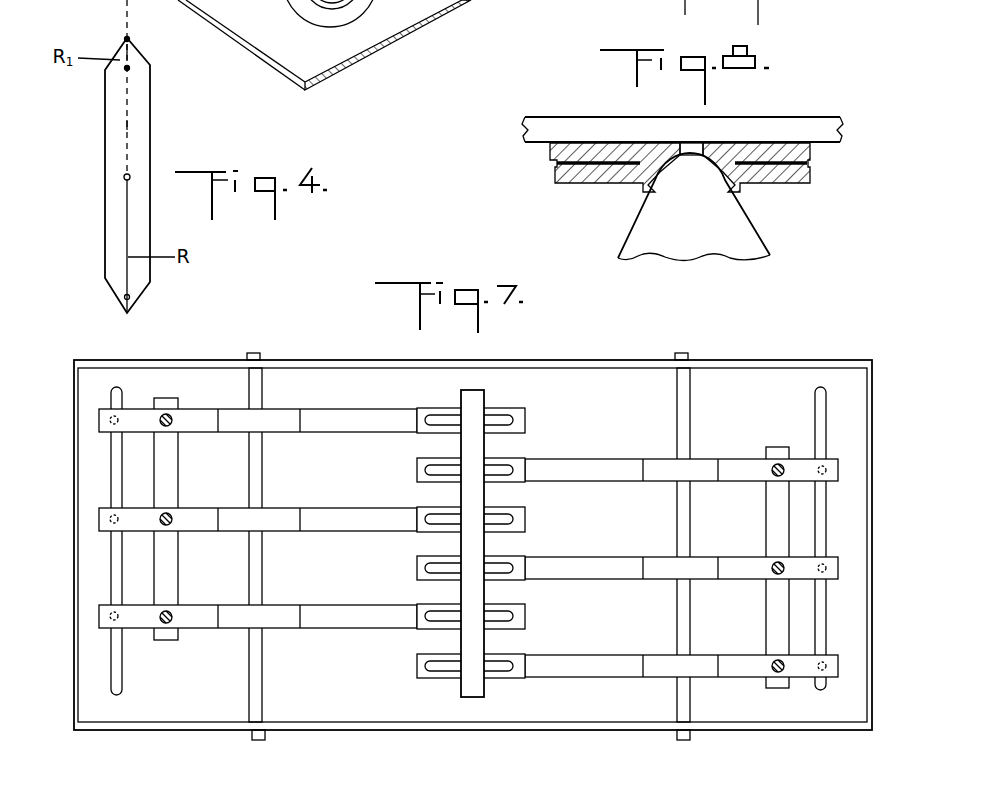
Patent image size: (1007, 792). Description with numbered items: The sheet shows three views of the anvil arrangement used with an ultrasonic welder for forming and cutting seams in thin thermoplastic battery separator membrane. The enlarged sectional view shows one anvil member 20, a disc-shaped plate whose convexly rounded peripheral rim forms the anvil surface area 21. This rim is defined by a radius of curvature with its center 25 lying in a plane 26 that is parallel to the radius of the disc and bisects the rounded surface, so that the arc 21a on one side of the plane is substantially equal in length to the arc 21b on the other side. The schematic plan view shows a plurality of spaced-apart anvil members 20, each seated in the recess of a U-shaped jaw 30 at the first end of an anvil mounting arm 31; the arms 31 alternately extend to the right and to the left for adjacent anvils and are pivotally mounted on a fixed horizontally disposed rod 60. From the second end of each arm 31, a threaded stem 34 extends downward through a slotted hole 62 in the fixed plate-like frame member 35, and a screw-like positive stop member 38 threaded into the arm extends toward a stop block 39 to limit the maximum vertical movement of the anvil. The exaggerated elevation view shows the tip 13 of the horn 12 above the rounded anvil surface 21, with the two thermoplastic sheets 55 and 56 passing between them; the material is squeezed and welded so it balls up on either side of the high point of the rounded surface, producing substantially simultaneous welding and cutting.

In FIG. 7, the horn 12 is at (468, 399).
In FIG. 8, the tip 13 is at (842, 128).
In FIG. 4, the anvil member 20 is at (105, 157).
In FIG. 8, the anvil member 20 is at (635, 229).
In FIG. 7, the anvil member 20 is at (503, 417).
In FIG. 8, the anvil surface area 21 is at (692, 157).
In FIG. 4, the arc 21a is at (131, 40).
In FIG. 4, the arc 21b is at (124, 40).
In FIG. 4, the center 25 is at (130, 69).
In FIG. 4, the plane 26 is at (128, 125).
In FIG. 7, the U-shaped jaw 30 is at (527, 412).
In FIG. 7, the anvil mounting arm 31 is at (354, 425).
In FIG. 7, the threaded stem 34 is at (97, 417).
In FIG. 4, the frame member 35 is at (373, 28).
In FIG. 7, the frame member 35 is at (612, 418).
In FIG. 7, the positive stop member 38 is at (170, 516).
In FIG. 7, the stop block 39 is at (176, 642).
In FIG. 8, the sheet of thermoplastic material 55 is at (812, 157).
In FIG. 8, the sheet of thermoplastic material 56 is at (800, 183).
In FIG. 7, the rod 60 is at (262, 480).
In FIG. 7, the slotted hole 62 is at (110, 468).